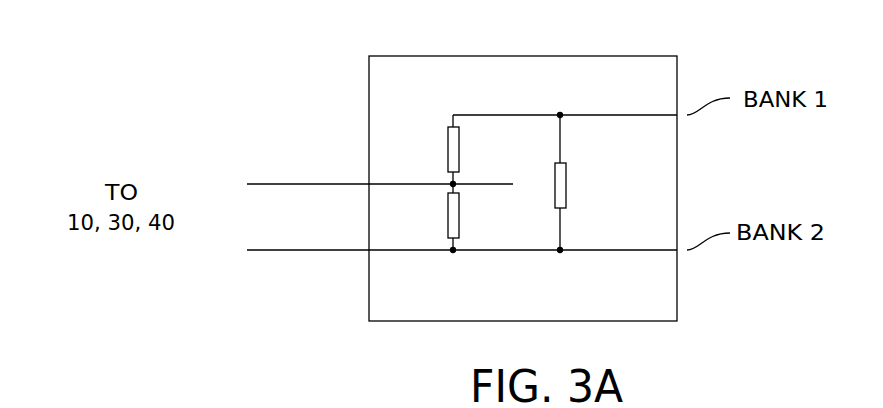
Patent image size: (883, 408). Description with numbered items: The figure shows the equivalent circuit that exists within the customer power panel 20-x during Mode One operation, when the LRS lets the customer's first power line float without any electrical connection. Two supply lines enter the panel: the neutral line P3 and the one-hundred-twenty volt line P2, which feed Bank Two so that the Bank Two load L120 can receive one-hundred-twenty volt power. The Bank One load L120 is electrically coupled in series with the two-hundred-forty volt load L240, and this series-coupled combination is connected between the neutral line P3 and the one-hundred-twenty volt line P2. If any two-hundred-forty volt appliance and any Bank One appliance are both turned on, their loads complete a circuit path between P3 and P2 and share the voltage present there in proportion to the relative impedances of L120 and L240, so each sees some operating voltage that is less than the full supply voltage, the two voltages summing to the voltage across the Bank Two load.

The customer power panel 20-x is at (706, 41).
The 120 VAC load L120 is at (475, 222).
The 240 VAC load L240 is at (566, 192).
The 120 VAC line P2 is at (313, 248).
The neutral line P3 is at (313, 182).